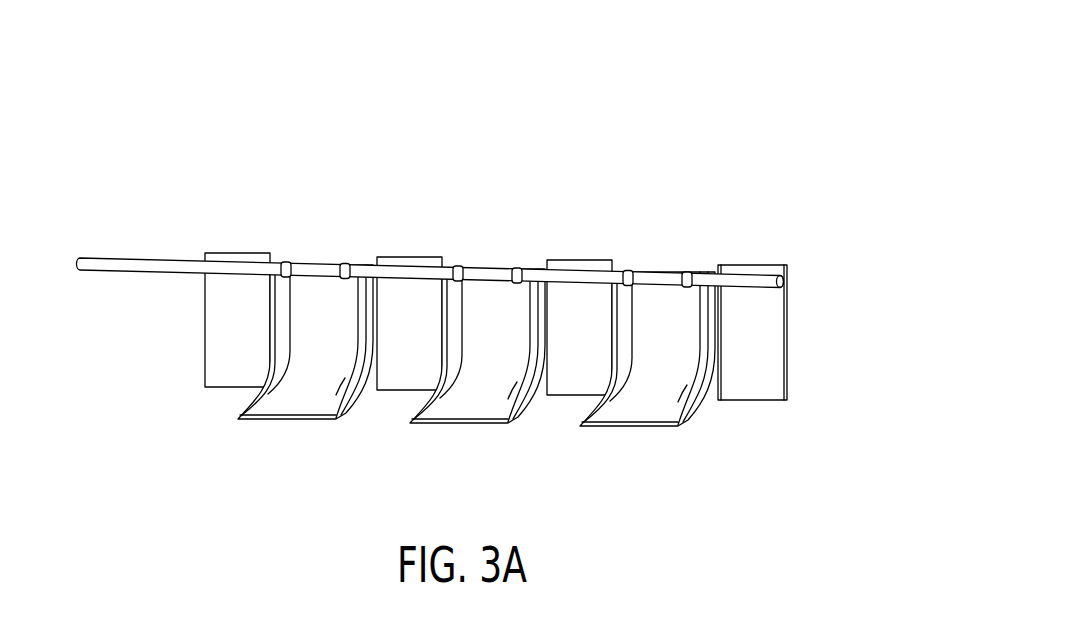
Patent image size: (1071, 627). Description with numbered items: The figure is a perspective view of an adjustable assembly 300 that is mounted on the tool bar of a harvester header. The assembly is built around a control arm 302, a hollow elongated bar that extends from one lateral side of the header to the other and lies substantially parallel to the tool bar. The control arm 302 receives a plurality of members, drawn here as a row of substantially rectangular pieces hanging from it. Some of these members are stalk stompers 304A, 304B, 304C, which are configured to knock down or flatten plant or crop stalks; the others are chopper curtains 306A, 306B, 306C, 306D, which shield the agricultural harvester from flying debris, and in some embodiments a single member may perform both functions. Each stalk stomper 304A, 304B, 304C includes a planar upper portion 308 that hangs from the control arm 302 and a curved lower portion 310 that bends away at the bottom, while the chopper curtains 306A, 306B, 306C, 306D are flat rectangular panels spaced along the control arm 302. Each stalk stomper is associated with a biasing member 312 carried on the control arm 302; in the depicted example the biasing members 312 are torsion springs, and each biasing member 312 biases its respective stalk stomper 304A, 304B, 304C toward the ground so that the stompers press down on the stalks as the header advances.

The adjustable assembly 300 is at (773, 85).
The control arm 302 is at (128, 250).
The stalk stomper 304A is at (644, 418).
The stalk stomper 304B is at (473, 412).
The stalk stomper 304C is at (302, 410).
The chopper curtain 306A is at (776, 253).
The chopper curtain 306B is at (608, 249).
The chopper curtain 306C is at (439, 244).
The chopper curtain 306D is at (263, 238).
The planar upper portion 308 is at (339, 311).
The curved lower portion 310 is at (240, 406).
The biasing member 312 is at (327, 248).